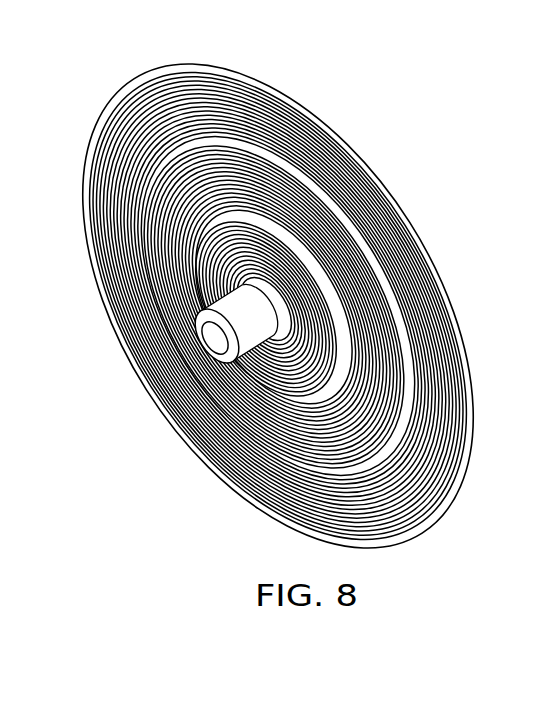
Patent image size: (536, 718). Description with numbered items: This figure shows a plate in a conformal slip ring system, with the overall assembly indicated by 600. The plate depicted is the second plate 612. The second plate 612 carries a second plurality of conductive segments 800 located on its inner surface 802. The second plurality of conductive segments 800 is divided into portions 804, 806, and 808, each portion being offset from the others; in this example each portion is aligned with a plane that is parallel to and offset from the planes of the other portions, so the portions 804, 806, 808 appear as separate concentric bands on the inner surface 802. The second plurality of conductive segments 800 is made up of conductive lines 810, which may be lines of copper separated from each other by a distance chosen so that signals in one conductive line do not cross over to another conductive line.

The spiral coil assembly 600 is at (103, 55).
The second plate 612 is at (303, 103).
The inner surface 802 is at (343, 172).
The portion 808 is at (205, 111).
The portion 806 is at (210, 193).
The portion 804 is at (237, 260).
The conductive lines 810 is at (232, 400).
The second plurality of conductive segments 800 is at (260, 476).